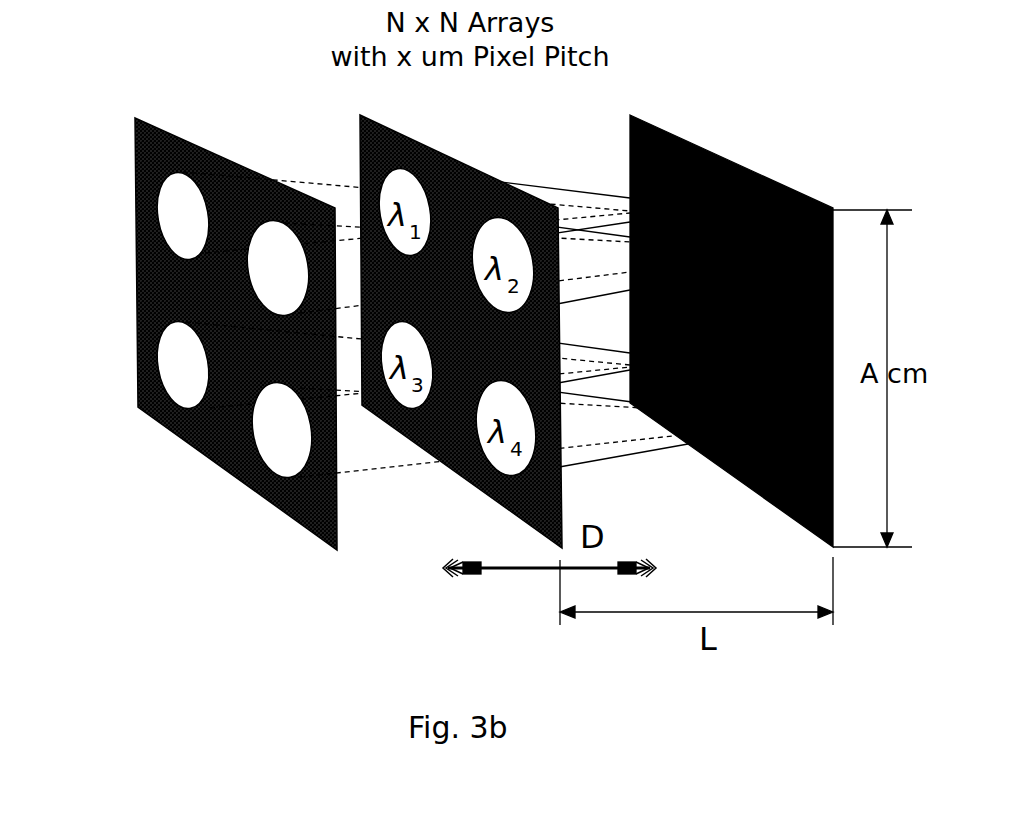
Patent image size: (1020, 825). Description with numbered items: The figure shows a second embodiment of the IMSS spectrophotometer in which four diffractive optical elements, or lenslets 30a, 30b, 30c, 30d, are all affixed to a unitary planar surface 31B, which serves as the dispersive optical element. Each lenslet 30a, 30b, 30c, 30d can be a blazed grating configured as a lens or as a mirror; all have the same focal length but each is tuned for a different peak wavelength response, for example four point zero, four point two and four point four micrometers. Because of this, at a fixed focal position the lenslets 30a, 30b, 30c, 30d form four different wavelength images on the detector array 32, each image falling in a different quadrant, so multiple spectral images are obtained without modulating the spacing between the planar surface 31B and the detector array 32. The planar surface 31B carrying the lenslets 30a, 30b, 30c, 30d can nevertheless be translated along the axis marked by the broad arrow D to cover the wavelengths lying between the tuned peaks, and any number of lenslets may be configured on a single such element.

The unitary planar surface 31B is at (160, 131).
The lenslet 30a is at (158, 215).
The lenslet 30b is at (262, 222).
The lenslet 30c is at (158, 368).
The lenslet 30d is at (292, 478).
The detector array 32 is at (746, 170).